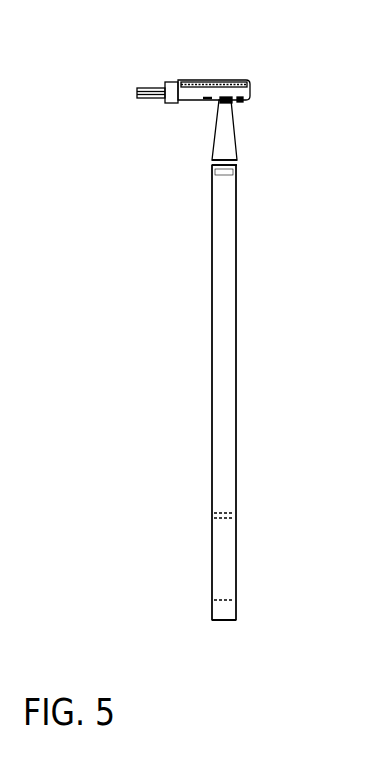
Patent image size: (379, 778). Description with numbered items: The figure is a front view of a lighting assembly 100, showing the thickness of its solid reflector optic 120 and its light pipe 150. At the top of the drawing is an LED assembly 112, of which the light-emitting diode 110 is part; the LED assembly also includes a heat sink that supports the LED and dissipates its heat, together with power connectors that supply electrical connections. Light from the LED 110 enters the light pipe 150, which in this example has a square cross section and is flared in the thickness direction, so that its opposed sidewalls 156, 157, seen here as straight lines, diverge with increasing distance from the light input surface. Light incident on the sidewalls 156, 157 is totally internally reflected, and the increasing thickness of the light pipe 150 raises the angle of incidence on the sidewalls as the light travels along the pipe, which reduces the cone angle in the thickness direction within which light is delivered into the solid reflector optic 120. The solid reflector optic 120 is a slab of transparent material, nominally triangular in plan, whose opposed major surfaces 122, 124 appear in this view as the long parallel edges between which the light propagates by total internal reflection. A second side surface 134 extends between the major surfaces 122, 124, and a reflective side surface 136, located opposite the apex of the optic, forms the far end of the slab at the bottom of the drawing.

The lighting assembly 100 is at (140, 59).
The LED assembly 112 is at (255, 76).
The light-emitting diode (LED) 110 is at (244, 101).
The light pipe 150 is at (231, 138).
The sidewall 156 is at (213, 125).
The sidewall 157 is at (236, 156).
The solid reflector optic 120 is at (246, 431).
The second side surface 134 is at (223, 283).
The major surface 122 is at (211, 330).
The major surface 124 is at (237, 329).
The reflective side surface 136 is at (224, 619).